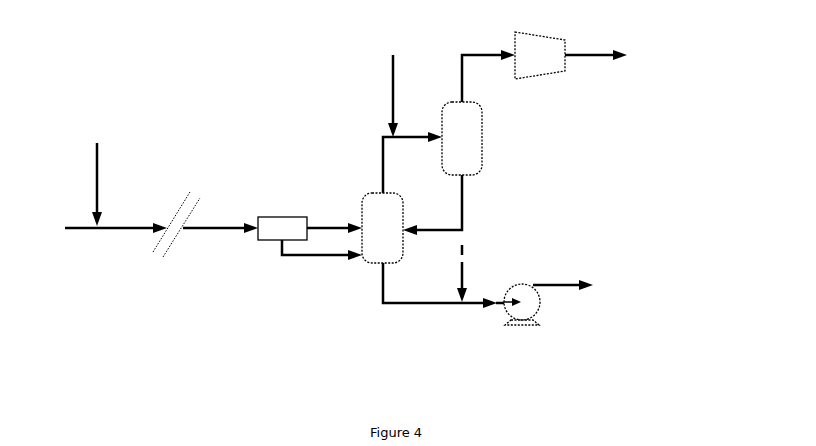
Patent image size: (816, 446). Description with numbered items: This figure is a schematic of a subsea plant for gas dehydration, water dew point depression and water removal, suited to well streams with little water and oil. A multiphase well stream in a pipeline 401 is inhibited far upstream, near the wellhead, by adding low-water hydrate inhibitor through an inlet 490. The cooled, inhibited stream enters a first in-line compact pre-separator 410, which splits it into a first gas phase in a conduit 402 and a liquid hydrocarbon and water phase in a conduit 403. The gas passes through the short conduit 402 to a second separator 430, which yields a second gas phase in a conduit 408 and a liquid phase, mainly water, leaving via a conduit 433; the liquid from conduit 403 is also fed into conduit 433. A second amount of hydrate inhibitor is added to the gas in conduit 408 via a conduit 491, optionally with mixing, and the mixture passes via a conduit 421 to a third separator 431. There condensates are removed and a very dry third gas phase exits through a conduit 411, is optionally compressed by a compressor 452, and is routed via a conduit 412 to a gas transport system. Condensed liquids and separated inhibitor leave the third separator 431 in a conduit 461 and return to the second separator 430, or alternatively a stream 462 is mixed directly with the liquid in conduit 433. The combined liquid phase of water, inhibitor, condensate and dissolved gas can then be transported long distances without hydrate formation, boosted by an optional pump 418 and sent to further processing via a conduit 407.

The pipeline 401 is at (70, 228).
The inlet 490 is at (95, 156).
The pre-separator 410 is at (282, 217).
The conduit 402 is at (330, 228).
The conduit 403 is at (332, 257).
The second separator 430 is at (382, 228).
The conduit 408 is at (380, 153).
The conduit 491 is at (390, 78).
The conduit 421 is at (405, 133).
The third separator 431 is at (462, 138).
The conduit 411 is at (463, 53).
The compressor 452 is at (540, 55).
The conduit 412 is at (578, 53).
The conduit 461 is at (465, 213).
The stream 462 is at (465, 252).
The conduit 433 is at (422, 308).
The pump 418 is at (538, 303).
The conduit 407 is at (560, 282).